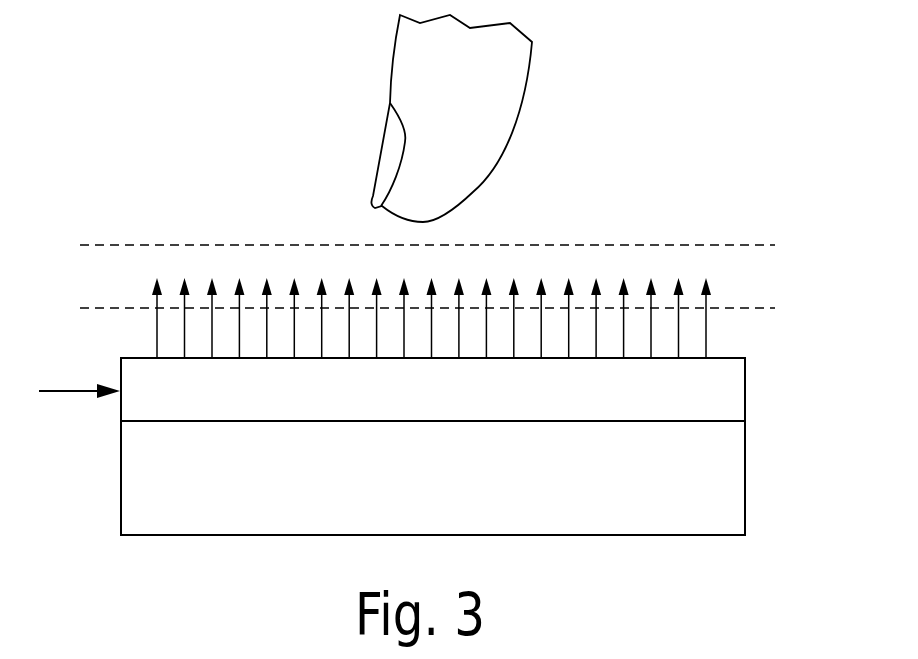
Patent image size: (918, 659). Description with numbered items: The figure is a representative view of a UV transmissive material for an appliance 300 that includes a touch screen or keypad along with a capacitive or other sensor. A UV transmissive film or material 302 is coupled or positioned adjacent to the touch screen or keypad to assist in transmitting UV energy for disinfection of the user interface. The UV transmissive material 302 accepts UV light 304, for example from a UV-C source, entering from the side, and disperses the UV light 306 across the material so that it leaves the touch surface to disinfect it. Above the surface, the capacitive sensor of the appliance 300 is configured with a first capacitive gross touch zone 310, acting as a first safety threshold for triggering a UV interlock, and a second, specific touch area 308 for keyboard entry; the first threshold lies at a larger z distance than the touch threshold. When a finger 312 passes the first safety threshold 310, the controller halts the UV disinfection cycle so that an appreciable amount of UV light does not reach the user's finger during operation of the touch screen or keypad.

The appliance 300 is at (716, 458).
The UV transmissive film or material 302 is at (716, 402).
The UV light 304 is at (78, 391).
The dispersed UV light 306 is at (651, 318).
The second specific touch area 308 is at (100, 308).
The first capacitive gross touch zone 310 is at (607, 245).
The finger 312 is at (473, 190).